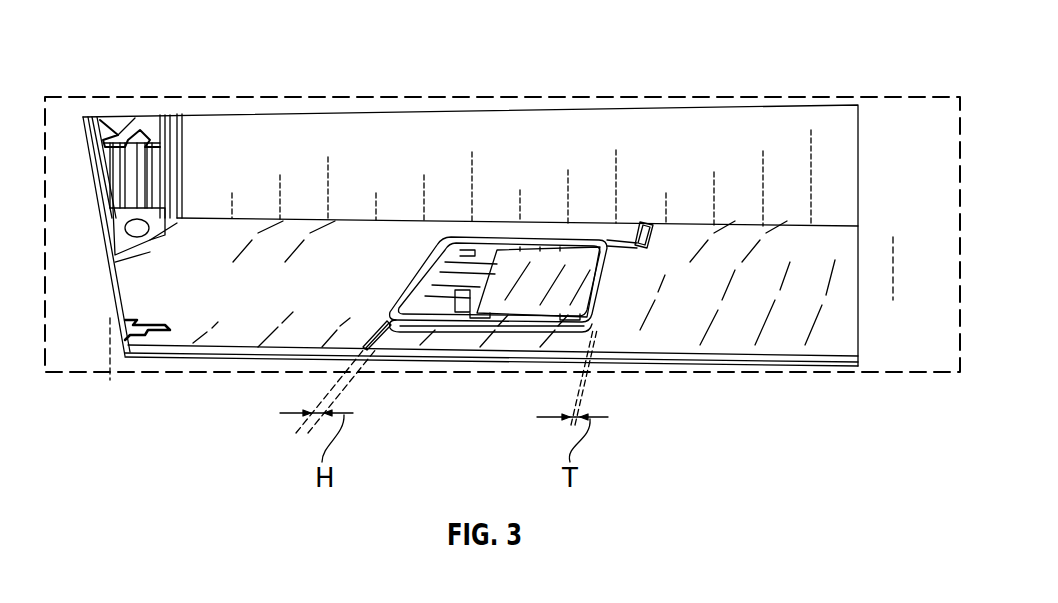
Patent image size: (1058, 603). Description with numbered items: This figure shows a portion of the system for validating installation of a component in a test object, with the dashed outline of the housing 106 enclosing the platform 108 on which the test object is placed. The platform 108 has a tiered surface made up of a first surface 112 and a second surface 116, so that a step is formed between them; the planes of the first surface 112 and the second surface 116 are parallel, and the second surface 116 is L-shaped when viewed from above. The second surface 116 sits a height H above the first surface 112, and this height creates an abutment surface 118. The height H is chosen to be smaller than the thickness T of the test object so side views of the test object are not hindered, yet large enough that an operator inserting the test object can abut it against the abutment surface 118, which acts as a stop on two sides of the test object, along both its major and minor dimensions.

The housing 106 is at (495, 97).
The platform 108 is at (222, 367).
The first surface 112 is at (325, 255).
The second surface 116 is at (672, 332).
The abutment surface 118 is at (385, 336).